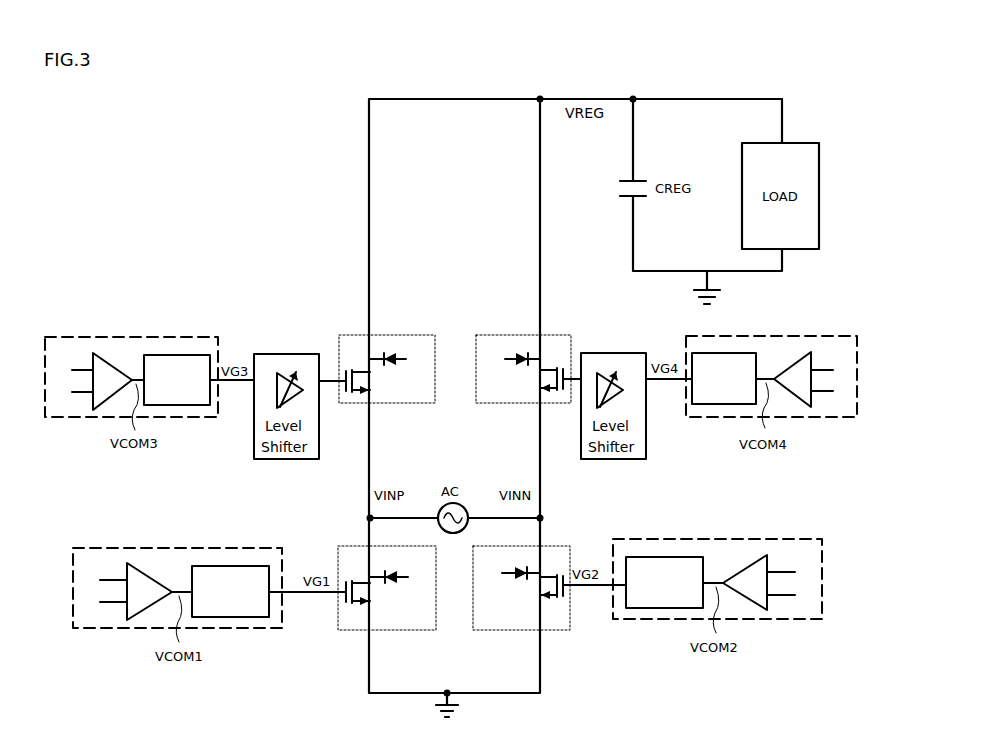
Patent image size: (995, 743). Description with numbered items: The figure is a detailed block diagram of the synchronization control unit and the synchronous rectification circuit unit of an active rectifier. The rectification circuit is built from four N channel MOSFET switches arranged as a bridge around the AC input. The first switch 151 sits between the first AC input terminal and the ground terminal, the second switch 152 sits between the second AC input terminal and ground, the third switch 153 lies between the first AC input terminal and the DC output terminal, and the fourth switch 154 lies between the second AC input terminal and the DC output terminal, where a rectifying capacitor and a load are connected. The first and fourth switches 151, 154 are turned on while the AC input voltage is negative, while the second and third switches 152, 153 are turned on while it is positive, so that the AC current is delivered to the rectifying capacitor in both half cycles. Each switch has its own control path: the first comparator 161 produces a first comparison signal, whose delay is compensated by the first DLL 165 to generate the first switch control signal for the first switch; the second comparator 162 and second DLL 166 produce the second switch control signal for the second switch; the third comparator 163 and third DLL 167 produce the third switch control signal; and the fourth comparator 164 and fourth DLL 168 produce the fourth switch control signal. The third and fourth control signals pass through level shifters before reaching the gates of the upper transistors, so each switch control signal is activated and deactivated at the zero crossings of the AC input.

The first switch 151 is at (350, 632).
The second switch 152 is at (560, 632).
The third switch 153 is at (347, 335).
The fourth switch 154 is at (566, 335).
The first comparator 161 is at (141, 570).
The second comparator 162 is at (755, 556).
The third comparator 163 is at (104, 352).
The fourth comparator 164 is at (797, 352).
The first DLL 165 is at (244, 566).
The second DLL 166 is at (652, 557).
The third DLL 167 is at (200, 354).
The fourth DLL 168 is at (742, 353).